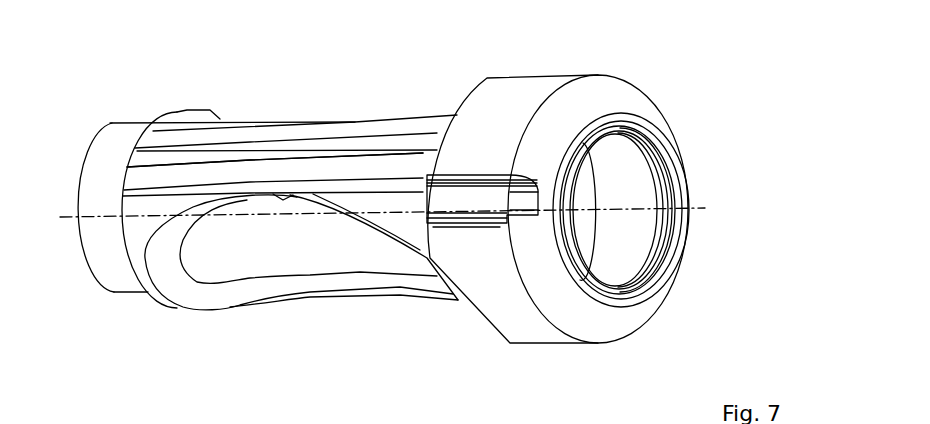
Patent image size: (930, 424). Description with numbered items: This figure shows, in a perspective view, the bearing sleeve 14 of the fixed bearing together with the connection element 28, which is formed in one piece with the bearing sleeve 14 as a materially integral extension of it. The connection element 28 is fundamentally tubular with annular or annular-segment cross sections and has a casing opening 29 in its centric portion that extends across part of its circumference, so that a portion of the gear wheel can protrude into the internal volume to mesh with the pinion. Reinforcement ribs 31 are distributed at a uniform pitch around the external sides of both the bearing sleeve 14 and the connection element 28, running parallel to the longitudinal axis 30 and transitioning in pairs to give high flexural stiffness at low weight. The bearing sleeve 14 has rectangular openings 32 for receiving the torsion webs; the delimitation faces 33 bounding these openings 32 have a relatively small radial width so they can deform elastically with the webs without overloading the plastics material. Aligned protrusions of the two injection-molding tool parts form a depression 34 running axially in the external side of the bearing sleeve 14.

The bearing sleeve 14 is at (518, 87).
The connection element 28 is at (386, 122).
The casing opening 29 is at (304, 110).
The longitudinal axis 30 is at (703, 217).
The reinforcement ribs 31 is at (209, 163).
The openings 32 is at (511, 223).
The delimitation faces 33 is at (501, 222).
The depression 34 is at (485, 191).